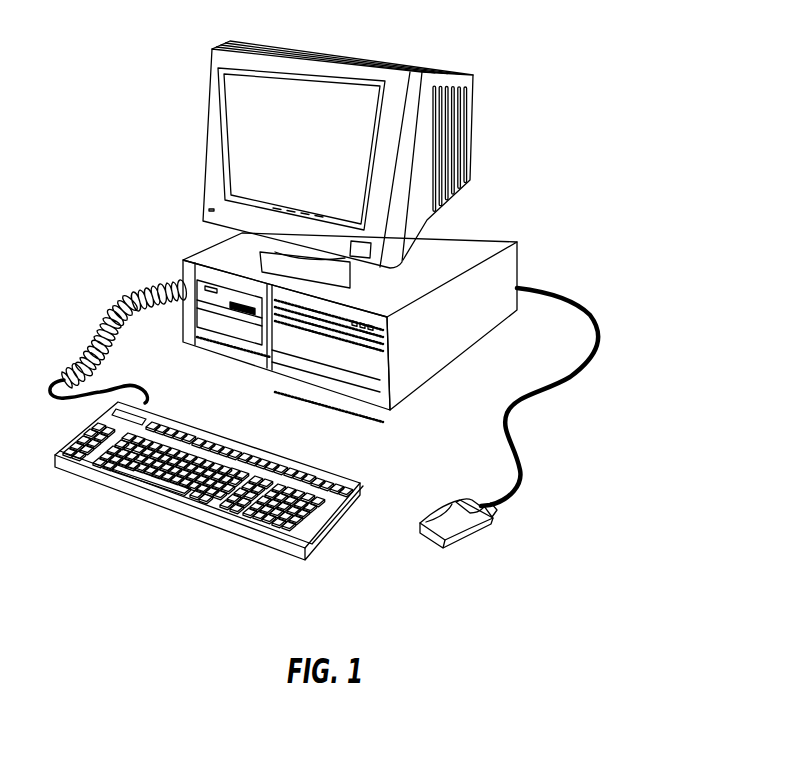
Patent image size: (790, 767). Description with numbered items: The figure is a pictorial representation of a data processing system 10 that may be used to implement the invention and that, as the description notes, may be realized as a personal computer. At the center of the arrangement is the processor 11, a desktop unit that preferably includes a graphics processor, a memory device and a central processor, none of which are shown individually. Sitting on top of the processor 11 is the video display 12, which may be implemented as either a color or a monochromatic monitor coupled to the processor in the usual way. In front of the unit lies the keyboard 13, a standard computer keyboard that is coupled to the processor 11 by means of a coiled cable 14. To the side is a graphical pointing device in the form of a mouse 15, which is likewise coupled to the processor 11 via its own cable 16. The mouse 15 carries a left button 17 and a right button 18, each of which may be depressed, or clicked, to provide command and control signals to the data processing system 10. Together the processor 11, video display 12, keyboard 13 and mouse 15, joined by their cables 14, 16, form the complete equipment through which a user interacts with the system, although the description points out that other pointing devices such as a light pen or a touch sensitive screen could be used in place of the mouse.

The data processing system 10 is at (589, 99).
The processor 11 is at (180, 265).
The video display 12 is at (205, 100).
The keyboard 13 is at (167, 510).
The cable 14 is at (100, 335).
The mouse 15 is at (451, 516).
The cable 16 is at (550, 390).
The left button 17 is at (462, 500).
The right button 18 is at (487, 517).